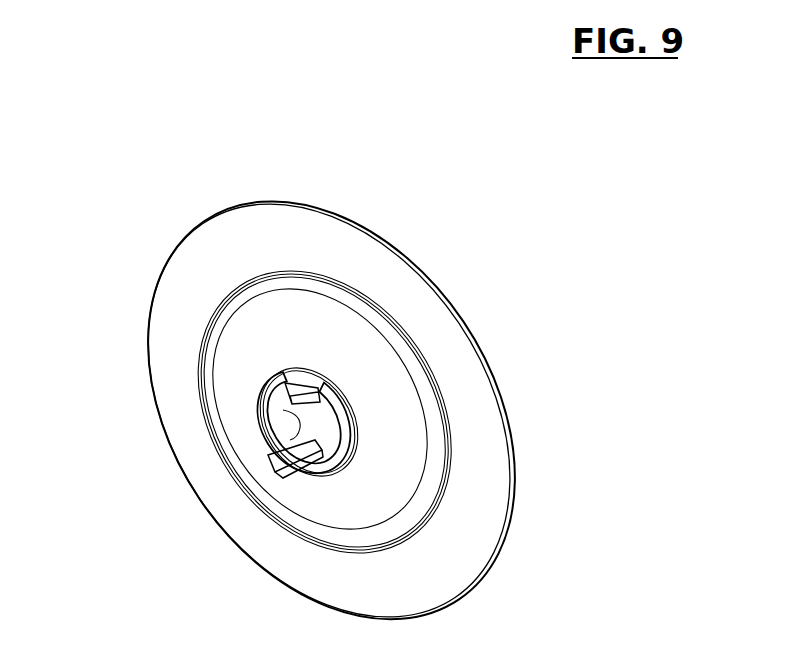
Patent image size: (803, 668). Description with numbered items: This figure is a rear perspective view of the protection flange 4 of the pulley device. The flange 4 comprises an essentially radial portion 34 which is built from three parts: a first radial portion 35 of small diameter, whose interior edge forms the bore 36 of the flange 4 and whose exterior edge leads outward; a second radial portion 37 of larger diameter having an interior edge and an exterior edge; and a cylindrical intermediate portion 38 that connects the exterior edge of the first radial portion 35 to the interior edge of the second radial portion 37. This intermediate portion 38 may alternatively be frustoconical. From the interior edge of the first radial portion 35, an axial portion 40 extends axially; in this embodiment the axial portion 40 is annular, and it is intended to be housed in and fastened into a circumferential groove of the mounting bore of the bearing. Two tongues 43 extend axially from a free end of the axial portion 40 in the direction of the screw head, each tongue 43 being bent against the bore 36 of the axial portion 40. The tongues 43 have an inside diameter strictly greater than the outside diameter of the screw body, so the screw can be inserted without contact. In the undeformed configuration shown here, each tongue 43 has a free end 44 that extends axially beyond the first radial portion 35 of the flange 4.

The protection flange 4 is at (170, 246).
The essentially radial portion 34 is at (395, 412).
The first radial portion 35 is at (458, 333).
The cylindrical intermediate portion 38 is at (410, 377).
The second radial portion 37 is at (377, 412).
The bore 36 is at (292, 422).
The axial portion 40 is at (345, 428).
The free end 44 is at (338, 472).
The tongues 43 is at (318, 478).